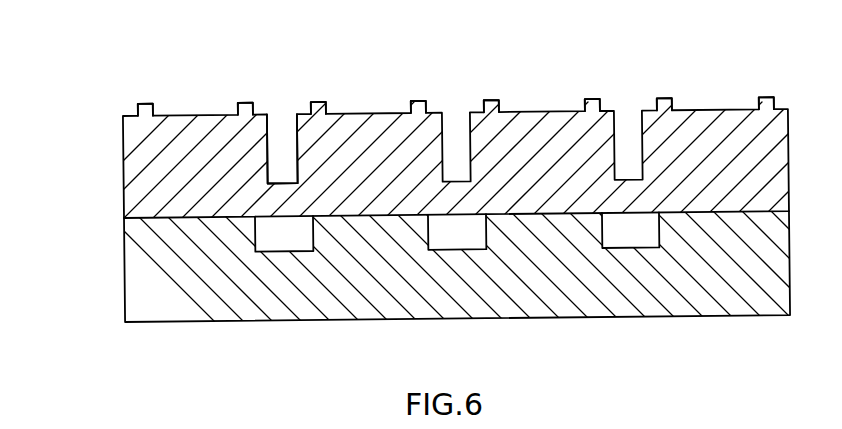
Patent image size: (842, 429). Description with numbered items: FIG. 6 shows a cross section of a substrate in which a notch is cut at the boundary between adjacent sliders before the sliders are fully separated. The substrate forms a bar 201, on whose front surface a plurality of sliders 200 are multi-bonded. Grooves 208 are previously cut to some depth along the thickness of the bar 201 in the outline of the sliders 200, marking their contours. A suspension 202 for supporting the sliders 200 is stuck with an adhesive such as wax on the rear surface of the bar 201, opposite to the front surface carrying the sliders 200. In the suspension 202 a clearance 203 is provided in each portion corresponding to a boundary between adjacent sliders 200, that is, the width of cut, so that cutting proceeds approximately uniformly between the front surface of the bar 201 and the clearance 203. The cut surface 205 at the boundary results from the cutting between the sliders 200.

The slider 200 is at (182, 118).
The bar 201 is at (100, 173).
The suspension 202 is at (126, 283).
The clearance 203 is at (281, 236).
The cut surface 205 is at (280, 155).
The groove 208 is at (286, 128).